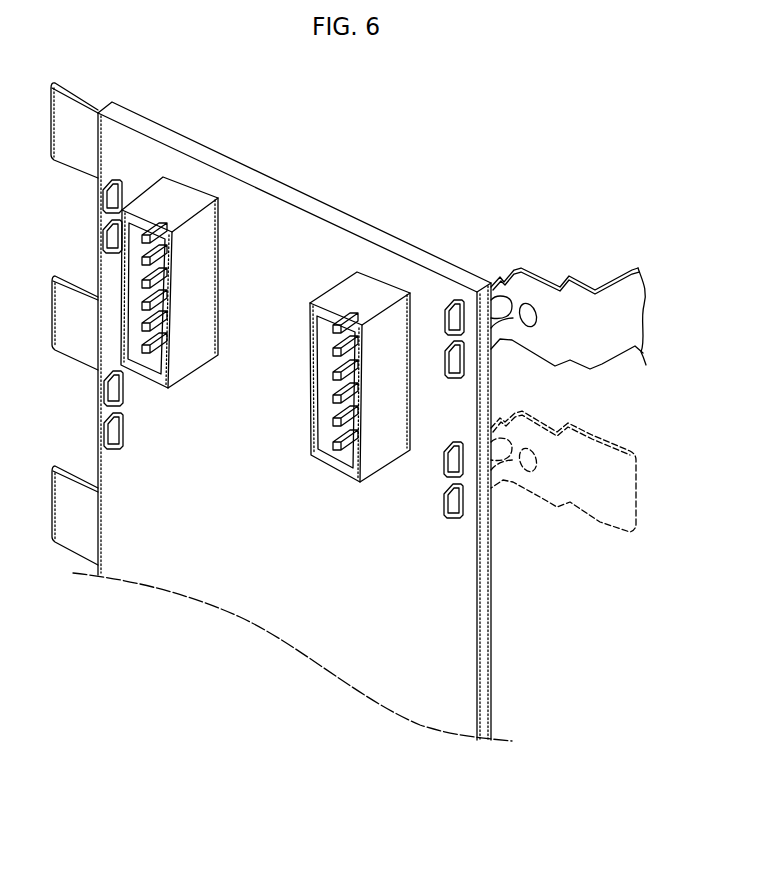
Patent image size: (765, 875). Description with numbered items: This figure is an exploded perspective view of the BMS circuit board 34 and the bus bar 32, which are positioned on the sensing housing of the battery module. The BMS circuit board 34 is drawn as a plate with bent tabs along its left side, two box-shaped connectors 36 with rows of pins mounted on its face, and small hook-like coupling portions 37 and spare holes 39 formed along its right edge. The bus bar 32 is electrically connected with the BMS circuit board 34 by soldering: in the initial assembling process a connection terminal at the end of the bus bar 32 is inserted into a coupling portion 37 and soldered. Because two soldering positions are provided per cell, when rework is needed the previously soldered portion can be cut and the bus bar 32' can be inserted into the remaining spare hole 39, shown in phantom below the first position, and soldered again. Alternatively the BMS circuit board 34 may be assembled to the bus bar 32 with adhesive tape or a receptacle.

The bus bar 32 is at (568, 299).
The bus bar (rework position) 32' is at (563, 452).
The BMS circuit board 34 is at (294, 193).
The connector 36 is at (172, 198).
The coupling portion 37 is at (455, 308).
The spare hole 39 is at (462, 519).